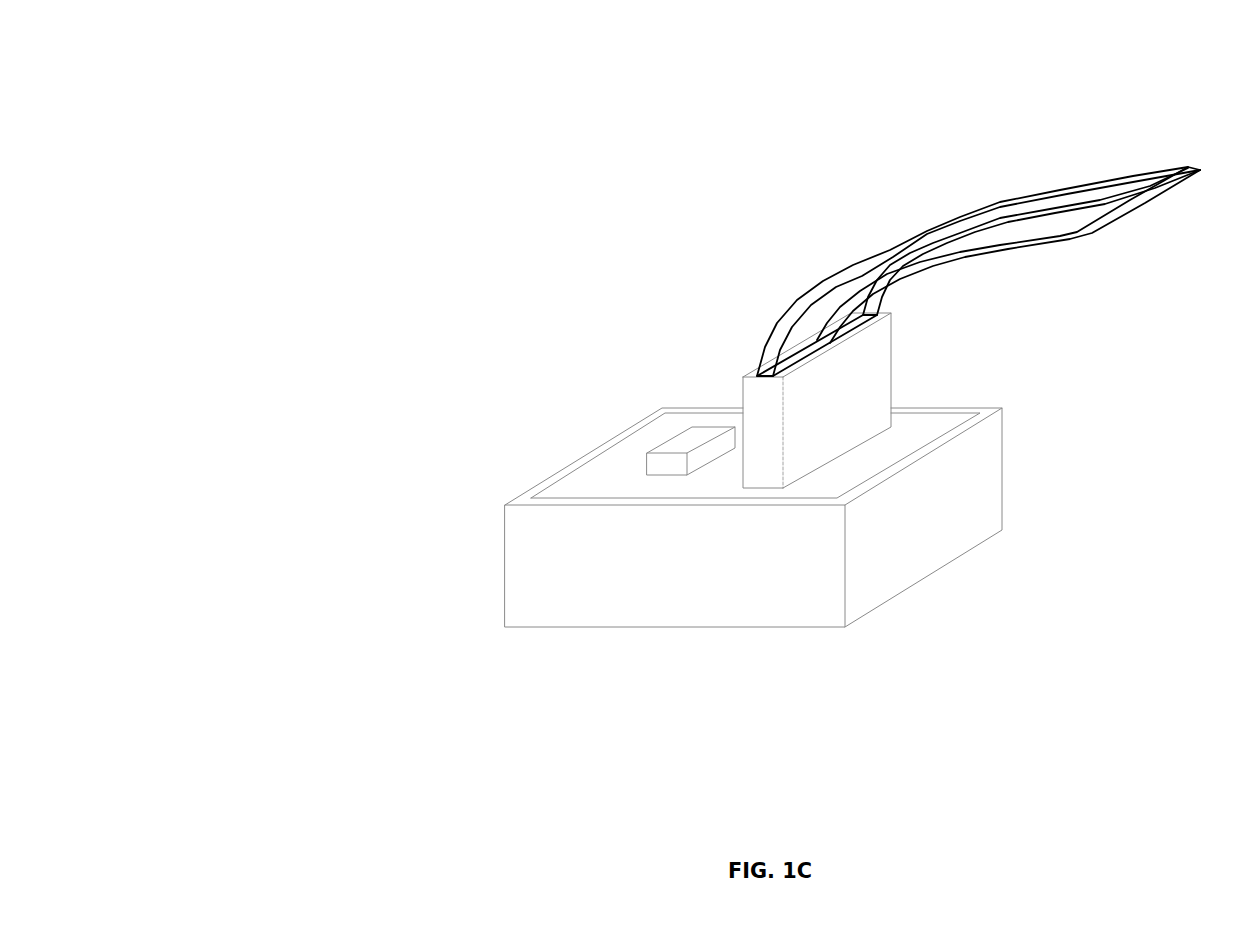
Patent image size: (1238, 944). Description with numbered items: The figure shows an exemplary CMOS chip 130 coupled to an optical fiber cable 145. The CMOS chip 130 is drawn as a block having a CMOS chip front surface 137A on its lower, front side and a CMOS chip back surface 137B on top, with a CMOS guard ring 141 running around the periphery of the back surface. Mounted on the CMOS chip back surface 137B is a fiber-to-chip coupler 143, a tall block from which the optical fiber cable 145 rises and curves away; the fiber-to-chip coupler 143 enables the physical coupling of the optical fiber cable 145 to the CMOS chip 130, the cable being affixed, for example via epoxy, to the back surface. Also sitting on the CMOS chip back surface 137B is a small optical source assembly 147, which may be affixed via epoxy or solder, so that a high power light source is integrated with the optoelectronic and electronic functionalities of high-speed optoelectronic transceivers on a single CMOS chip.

The CMOS chip 130 is at (369, 112).
The CMOS chip front surface 137A is at (657, 651).
The CMOS chip back surface 137B is at (631, 447).
The CMOS guard ring 141 is at (986, 470).
The fiber-to-chip coupler 143 is at (889, 340).
The optical fiber cable 145 is at (926, 216).
The optical source assembly 147 is at (685, 416).